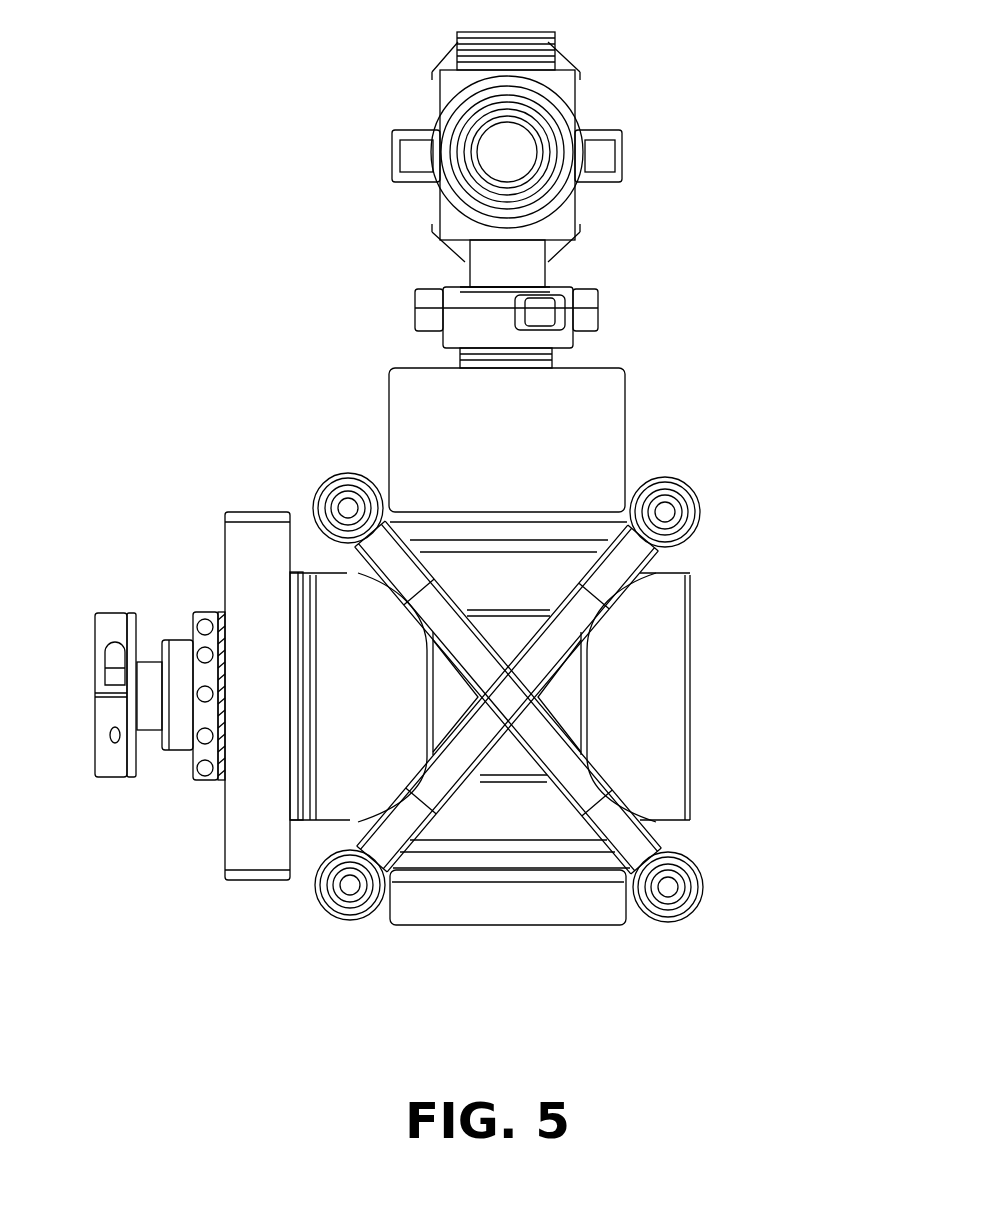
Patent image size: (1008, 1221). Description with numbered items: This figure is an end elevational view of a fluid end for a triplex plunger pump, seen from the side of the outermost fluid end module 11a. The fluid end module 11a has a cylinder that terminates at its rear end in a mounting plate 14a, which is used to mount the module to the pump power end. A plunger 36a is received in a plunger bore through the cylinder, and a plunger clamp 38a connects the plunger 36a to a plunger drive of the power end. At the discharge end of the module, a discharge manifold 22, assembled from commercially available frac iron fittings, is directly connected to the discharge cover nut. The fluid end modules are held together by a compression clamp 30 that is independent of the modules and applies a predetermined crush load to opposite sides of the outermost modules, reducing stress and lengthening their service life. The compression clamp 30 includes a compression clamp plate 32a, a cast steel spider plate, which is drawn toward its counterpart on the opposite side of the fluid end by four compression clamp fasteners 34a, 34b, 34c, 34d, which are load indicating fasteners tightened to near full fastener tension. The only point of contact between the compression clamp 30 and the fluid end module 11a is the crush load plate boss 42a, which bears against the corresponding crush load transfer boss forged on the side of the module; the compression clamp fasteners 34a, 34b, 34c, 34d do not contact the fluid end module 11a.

The discharge manifold 22 is at (585, 115).
The fluid end module 11a is at (605, 405).
The mounting plate 14a is at (240, 547).
The compression clamp 30 is at (597, 686).
The compression clamp plate 32a is at (510, 708).
The compression clamp fastener 34a is at (350, 487).
The compression clamp fastener 34b is at (693, 510).
The compression clamp fastener 34c is at (330, 887).
The compression clamp fastener 34d is at (695, 890).
The plunger 36a is at (183, 752).
The plunger clamp 38a is at (112, 765).
The crush load plate boss 42a is at (570, 698).